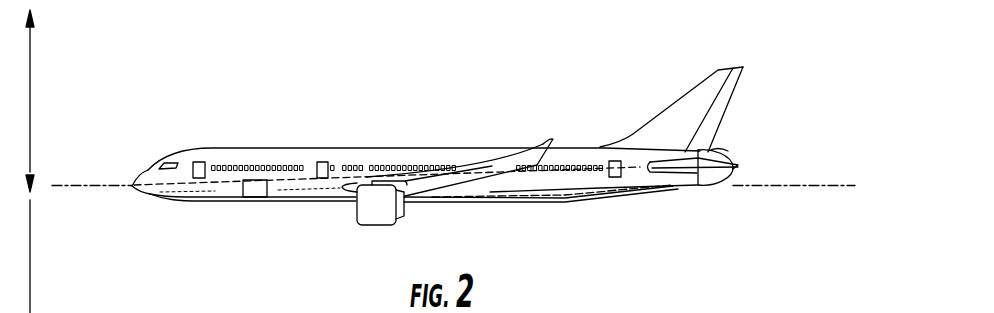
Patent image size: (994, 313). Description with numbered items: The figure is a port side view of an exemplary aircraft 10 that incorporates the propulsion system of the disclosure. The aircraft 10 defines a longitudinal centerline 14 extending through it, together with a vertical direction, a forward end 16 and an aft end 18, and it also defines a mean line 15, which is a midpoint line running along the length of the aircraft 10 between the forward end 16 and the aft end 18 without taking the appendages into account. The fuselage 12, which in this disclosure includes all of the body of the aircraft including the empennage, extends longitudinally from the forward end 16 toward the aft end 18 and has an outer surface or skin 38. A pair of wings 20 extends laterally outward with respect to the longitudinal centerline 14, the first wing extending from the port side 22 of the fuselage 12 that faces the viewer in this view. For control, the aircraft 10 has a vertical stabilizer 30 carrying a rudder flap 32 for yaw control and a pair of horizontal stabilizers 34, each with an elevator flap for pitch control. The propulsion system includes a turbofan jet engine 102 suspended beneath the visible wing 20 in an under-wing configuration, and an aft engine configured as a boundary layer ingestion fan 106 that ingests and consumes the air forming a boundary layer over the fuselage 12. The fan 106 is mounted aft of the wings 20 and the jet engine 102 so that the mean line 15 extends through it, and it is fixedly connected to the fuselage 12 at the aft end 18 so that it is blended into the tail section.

The aircraft 10 is at (181, 99).
The fuselage 12 is at (222, 192).
The longitudinal centerline 14 is at (63, 188).
The mean line 15 is at (637, 160).
The forward end 16 is at (138, 202).
The aft end 18 is at (669, 205).
The wings 20 is at (492, 165).
The port side 22 is at (542, 199).
The vertical stabilizer 30 is at (700, 99).
The rudder flap 32 is at (727, 96).
The horizontal stabilizers 34 is at (706, 187).
The outer surface or skin 38 is at (358, 146).
The turbofan jet engine 102 is at (360, 232).
The boundary layer ingestion fan 106 is at (732, 134).